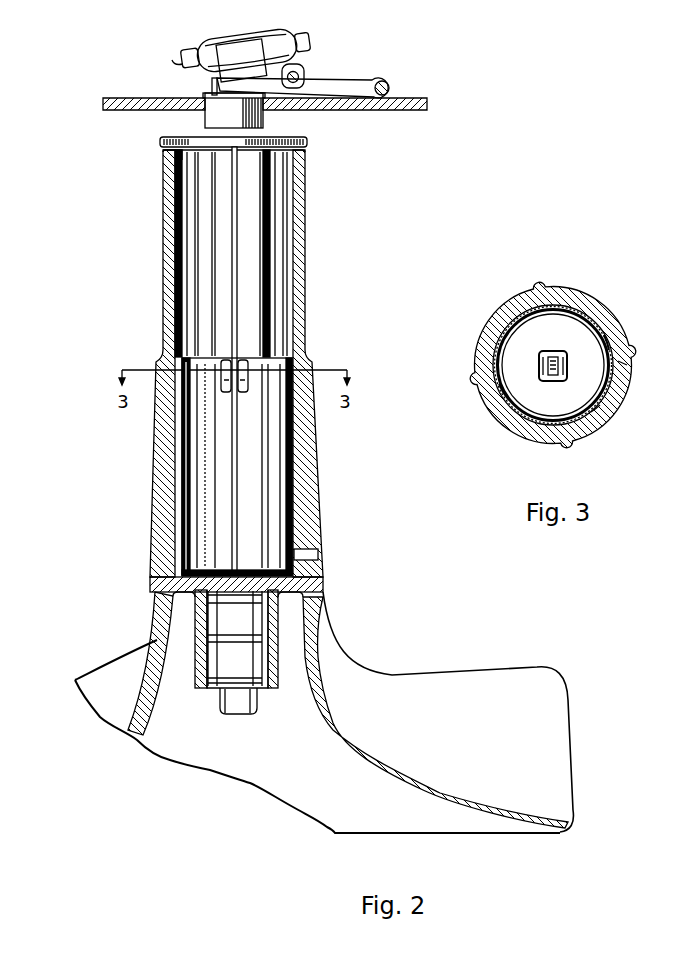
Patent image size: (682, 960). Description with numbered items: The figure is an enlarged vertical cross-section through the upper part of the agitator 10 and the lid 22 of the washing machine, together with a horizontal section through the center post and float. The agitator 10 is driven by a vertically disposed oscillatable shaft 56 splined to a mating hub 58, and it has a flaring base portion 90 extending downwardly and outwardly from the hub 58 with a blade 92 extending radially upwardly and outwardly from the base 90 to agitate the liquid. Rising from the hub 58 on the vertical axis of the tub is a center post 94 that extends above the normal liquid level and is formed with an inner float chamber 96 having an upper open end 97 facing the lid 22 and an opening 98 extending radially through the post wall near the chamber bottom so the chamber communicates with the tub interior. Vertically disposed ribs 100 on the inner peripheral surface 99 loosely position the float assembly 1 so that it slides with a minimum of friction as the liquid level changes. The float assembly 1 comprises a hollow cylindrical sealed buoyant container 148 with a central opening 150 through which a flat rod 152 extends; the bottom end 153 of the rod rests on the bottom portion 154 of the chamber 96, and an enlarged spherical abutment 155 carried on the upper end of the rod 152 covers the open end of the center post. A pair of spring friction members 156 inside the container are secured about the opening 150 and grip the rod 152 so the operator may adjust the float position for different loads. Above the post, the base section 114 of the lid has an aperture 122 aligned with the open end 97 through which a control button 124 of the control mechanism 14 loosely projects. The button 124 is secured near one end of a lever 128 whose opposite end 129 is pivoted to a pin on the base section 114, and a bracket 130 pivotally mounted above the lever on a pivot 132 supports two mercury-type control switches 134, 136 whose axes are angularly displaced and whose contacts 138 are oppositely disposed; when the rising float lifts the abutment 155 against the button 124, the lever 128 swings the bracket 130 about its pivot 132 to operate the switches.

In FIG. 2, the float assembly 1 is at (296, 475).
In FIG. 3, the float assembly 1 is at (486, 357).
In FIG. 2, the agitator 10 is at (75, 682).
In FIG. 2, the control mechanism 14 is at (324, 57).
In FIG. 2, the lid 22 is at (276, 101).
In FIG. 2, the oscillatable shaft 56 is at (251, 705).
In FIG. 2, the hub 58 is at (230, 666).
In FIG. 2, the base portion 90 is at (522, 822).
In FIG. 2, the blade 92 is at (545, 681).
In FIG. 2, the center post 94 is at (235, 363).
In FIG. 3, the center post 94 is at (492, 331).
In FIG. 2, the float chamber 96 is at (197, 230).
In FIG. 3, the float chamber 96 is at (523, 304).
In FIG. 2, the upper open end 97 is at (180, 152).
In FIG. 2, the opening 98 is at (308, 558).
In FIG. 3, the opening 98 is at (628, 365).
In FIG. 2, the inner peripheral surface 99 is at (285, 251).
In FIG. 3, the inner peripheral surface 99 is at (562, 309).
In FIG. 2, the ribs 100 is at (264, 298).
In FIG. 3, the ribs 100 is at (601, 327).
In FIG. 2, the base section 114 is at (418, 110).
In FIG. 2, the aperture 122 is at (204, 98).
In FIG. 2, the control button 124 is at (212, 106).
In FIG. 2, the lever 128 is at (354, 82).
In FIG. 2, the pivoted end 129 is at (392, 87).
In FIG. 2, the bracket 130 is at (212, 86).
In FIG. 2, the pivot 132 is at (305, 73).
In FIG. 2, the control switch 134 is at (262, 40).
In FIG. 2, the control switch 136 is at (202, 38).
In FIG. 2, the contacts 138 is at (173, 56).
In FIG. 2, the buoyant container 148 is at (198, 483).
In FIG. 3, the buoyant container 148 is at (607, 409).
In FIG. 2, the central opening 150 is at (227, 467).
In FIG. 3, the central opening 150 is at (552, 382).
In FIG. 2, the rod 152 is at (232, 322).
In FIG. 3, the rod 152 is at (565, 351).
In FIG. 2, the bottom end 153 is at (237, 573).
In FIG. 2, the bottom portion 154 is at (195, 578).
In FIG. 2, the abutment 155 is at (160, 143).
In FIG. 2, the spring friction members 156 is at (258, 372).
In FIG. 3, the spring friction members 156 is at (541, 363).